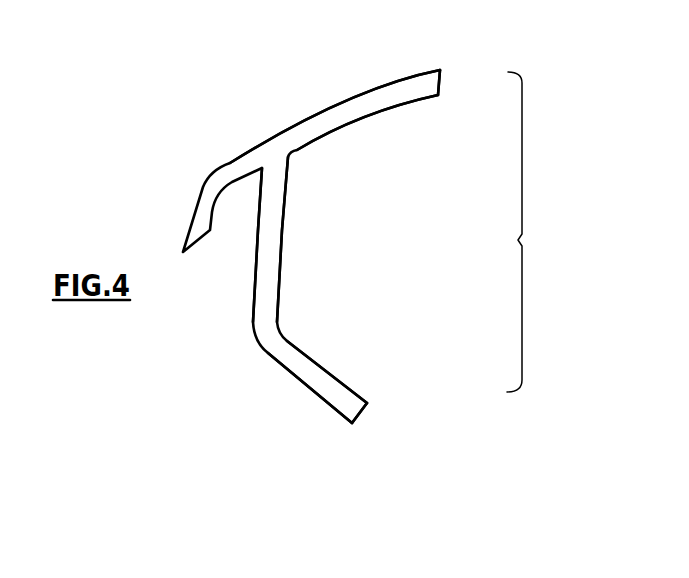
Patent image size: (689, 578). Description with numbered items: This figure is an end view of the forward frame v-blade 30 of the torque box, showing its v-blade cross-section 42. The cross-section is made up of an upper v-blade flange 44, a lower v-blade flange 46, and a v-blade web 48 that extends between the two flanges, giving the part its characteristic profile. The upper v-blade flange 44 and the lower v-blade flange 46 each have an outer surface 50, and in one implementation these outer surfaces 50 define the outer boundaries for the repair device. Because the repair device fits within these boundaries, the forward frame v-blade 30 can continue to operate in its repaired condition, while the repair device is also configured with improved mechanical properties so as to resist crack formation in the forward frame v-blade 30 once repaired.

The forward frame v-blade 30 is at (145, 193).
The v-blade cross-section 42 is at (522, 240).
The upper v-blade flange 44 is at (452, 58).
The lower v-blade flange 46 is at (408, 405).
The v-blade web 48 is at (242, 288).
The outer surface 50 is at (353, 97).